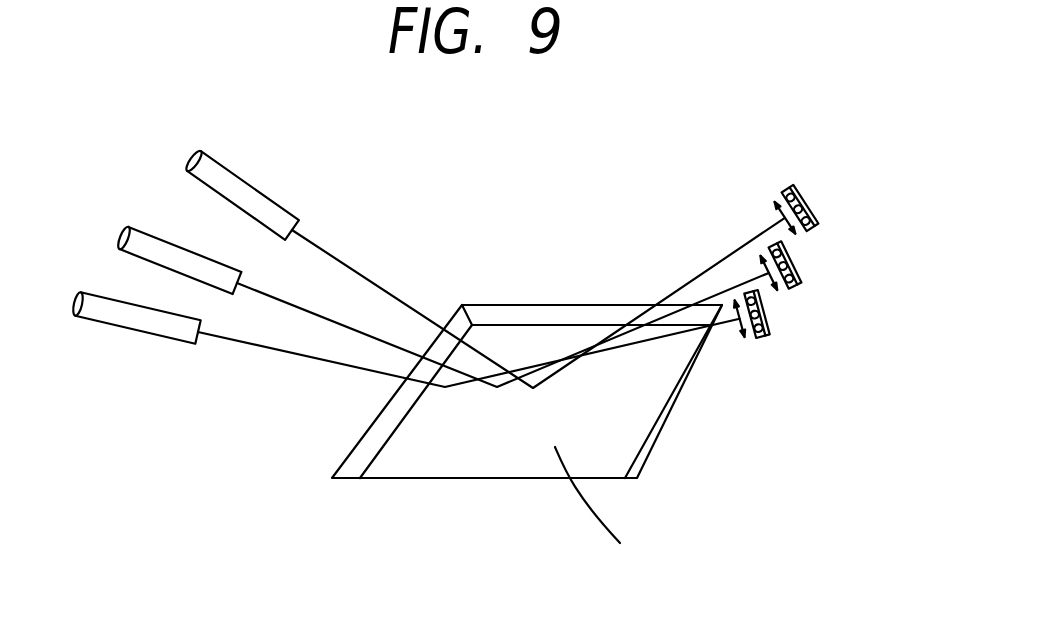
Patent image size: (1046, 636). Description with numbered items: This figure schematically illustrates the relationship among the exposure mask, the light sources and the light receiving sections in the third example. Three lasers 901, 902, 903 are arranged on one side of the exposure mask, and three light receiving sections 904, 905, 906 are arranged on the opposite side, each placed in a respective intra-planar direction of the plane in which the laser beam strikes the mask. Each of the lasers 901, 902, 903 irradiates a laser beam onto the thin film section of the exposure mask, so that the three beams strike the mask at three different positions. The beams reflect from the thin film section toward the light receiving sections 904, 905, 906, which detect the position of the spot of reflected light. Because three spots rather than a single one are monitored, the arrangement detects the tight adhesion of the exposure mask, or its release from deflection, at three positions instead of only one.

The laser 901 is at (232, 172).
The laser 902 is at (147, 234).
The laser 903 is at (100, 297).
The light receiving section 904 is at (810, 207).
The light receiving section 905 is at (801, 270).
The light receiving section 906 is at (769, 327).